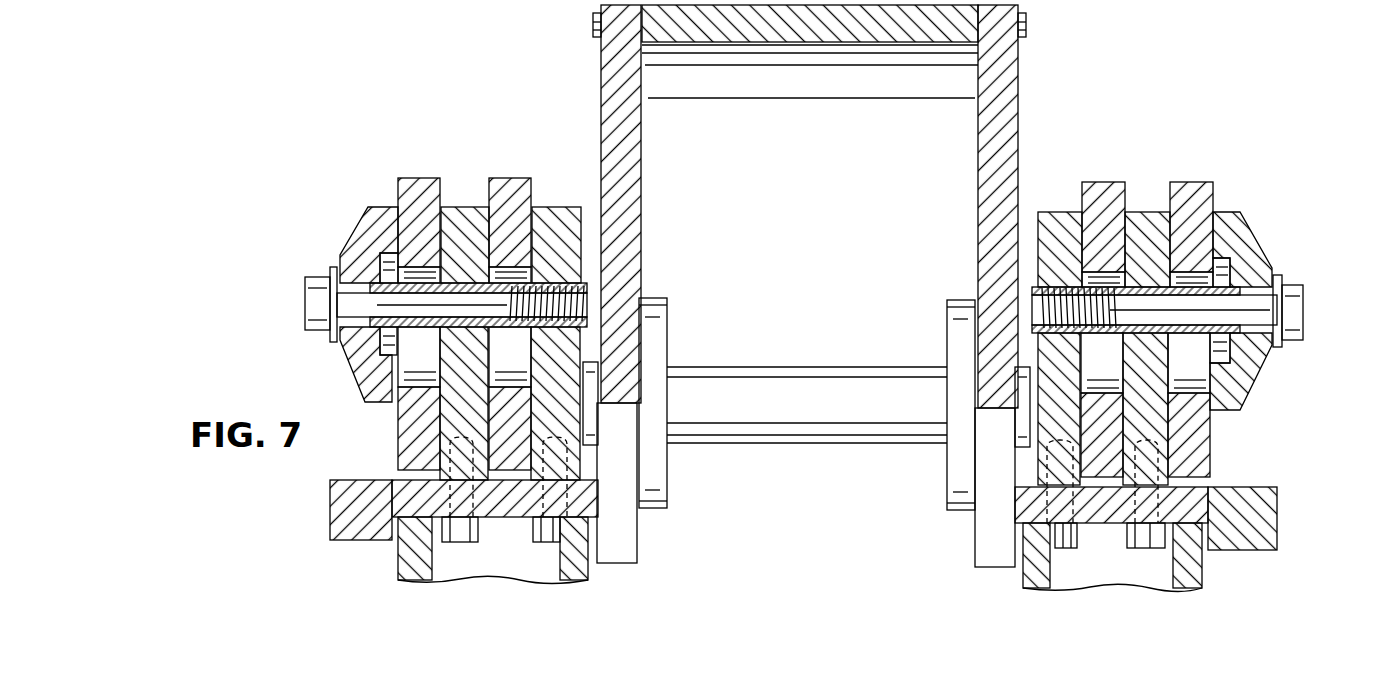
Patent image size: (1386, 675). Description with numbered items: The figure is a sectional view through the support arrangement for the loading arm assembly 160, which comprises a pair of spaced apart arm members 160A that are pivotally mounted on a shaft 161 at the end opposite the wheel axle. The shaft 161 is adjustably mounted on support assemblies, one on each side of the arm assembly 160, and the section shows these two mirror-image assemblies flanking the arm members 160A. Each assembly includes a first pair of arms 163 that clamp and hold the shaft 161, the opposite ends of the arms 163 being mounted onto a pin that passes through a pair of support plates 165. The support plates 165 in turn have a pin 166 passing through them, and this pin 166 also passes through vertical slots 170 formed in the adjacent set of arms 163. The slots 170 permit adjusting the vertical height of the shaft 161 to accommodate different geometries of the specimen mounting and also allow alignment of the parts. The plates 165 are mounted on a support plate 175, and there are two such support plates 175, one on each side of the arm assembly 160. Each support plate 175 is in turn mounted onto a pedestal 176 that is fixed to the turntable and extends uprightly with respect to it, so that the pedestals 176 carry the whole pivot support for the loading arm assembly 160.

The loading arm assembly 160 is at (1043, 61).
The arm members 160A is at (622, 118).
The shaft 161 is at (783, 397).
The arms 163 is at (421, 178).
The support plates 165 is at (567, 207).
The pin 166 is at (355, 208).
The vertical slots 170 is at (508, 362).
The support plate 175 is at (345, 495).
The pedestal 176 is at (396, 558).